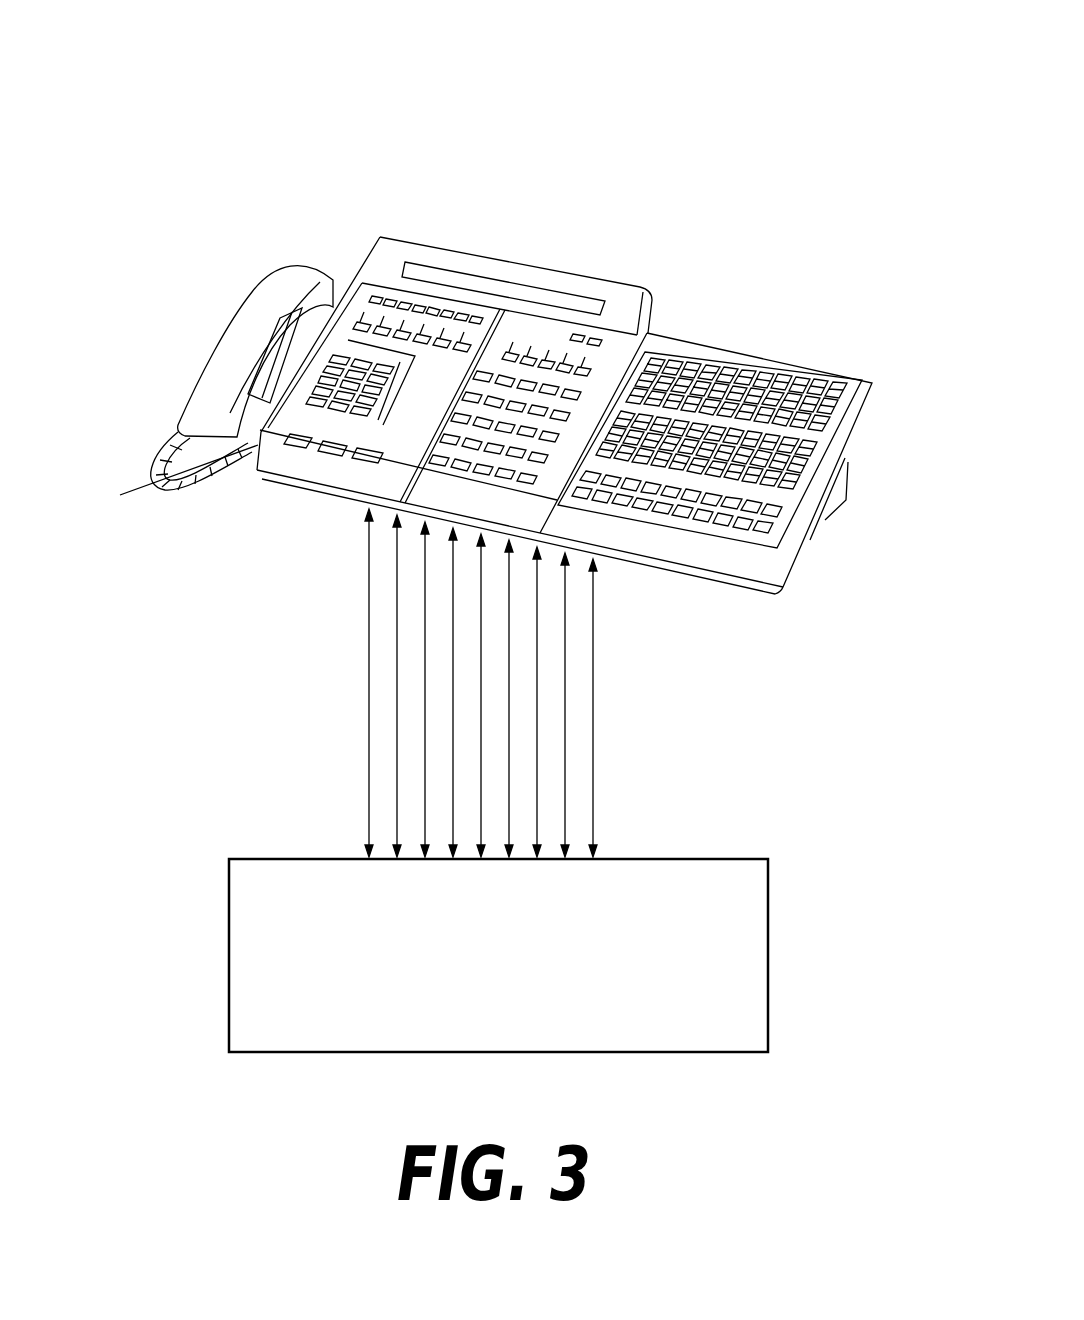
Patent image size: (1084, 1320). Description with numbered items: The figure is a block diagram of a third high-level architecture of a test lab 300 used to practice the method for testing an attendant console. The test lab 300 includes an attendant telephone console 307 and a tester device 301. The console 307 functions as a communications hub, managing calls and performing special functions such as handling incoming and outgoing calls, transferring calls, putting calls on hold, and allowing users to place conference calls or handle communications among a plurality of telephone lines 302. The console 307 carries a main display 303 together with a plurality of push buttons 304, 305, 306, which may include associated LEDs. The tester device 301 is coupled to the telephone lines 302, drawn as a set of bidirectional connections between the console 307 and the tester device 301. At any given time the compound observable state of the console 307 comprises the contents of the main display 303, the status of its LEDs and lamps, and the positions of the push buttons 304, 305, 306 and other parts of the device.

The test lab 300 is at (533, 27).
The tester device 301 is at (229, 968).
The telephone lines 302 is at (593, 750).
The main display 303 is at (497, 290).
The push buttons 304 is at (833, 380).
The push buttons 305 is at (430, 395).
The push buttons 306 is at (325, 407).
The attendant telephone console 307 is at (652, 325).